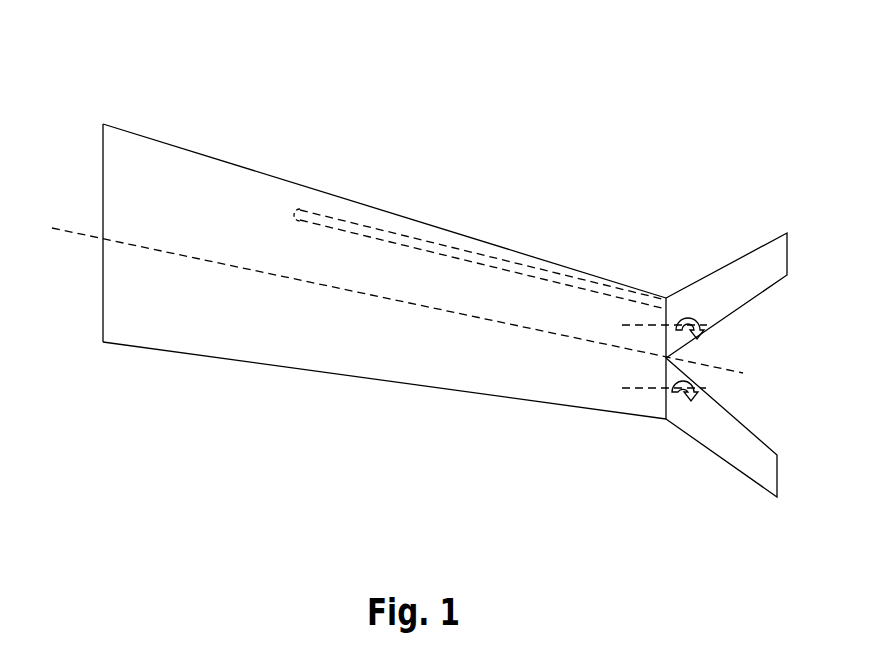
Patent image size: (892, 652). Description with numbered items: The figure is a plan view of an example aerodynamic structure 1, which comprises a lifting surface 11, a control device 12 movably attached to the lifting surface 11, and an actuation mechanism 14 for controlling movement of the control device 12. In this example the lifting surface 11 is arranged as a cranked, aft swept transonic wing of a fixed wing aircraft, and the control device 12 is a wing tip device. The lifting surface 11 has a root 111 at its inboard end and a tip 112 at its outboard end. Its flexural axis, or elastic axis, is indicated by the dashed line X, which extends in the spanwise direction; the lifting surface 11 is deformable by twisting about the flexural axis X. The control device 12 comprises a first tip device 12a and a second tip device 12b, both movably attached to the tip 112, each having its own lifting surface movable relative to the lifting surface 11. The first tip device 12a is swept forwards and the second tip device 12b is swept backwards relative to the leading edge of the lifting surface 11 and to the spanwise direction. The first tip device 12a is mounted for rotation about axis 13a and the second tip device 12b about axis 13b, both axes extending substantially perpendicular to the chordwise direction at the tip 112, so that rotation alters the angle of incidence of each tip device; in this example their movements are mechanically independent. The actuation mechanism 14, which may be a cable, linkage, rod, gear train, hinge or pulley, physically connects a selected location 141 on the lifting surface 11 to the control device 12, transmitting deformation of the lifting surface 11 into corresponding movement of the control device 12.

The aerodynamic structure 1 is at (578, 115).
The flexural axis X is at (70, 230).
The lifting surface 11 is at (297, 332).
The root 111 is at (95, 368).
The tip 112 is at (657, 426).
The actuation mechanism 14 is at (443, 247).
The selected location 141 is at (297, 208).
The control device 12 is at (805, 232).
The first tip device 12a is at (753, 280).
The second tip device 12b is at (750, 465).
The axis 13a is at (712, 327).
The axis 13b is at (713, 388).